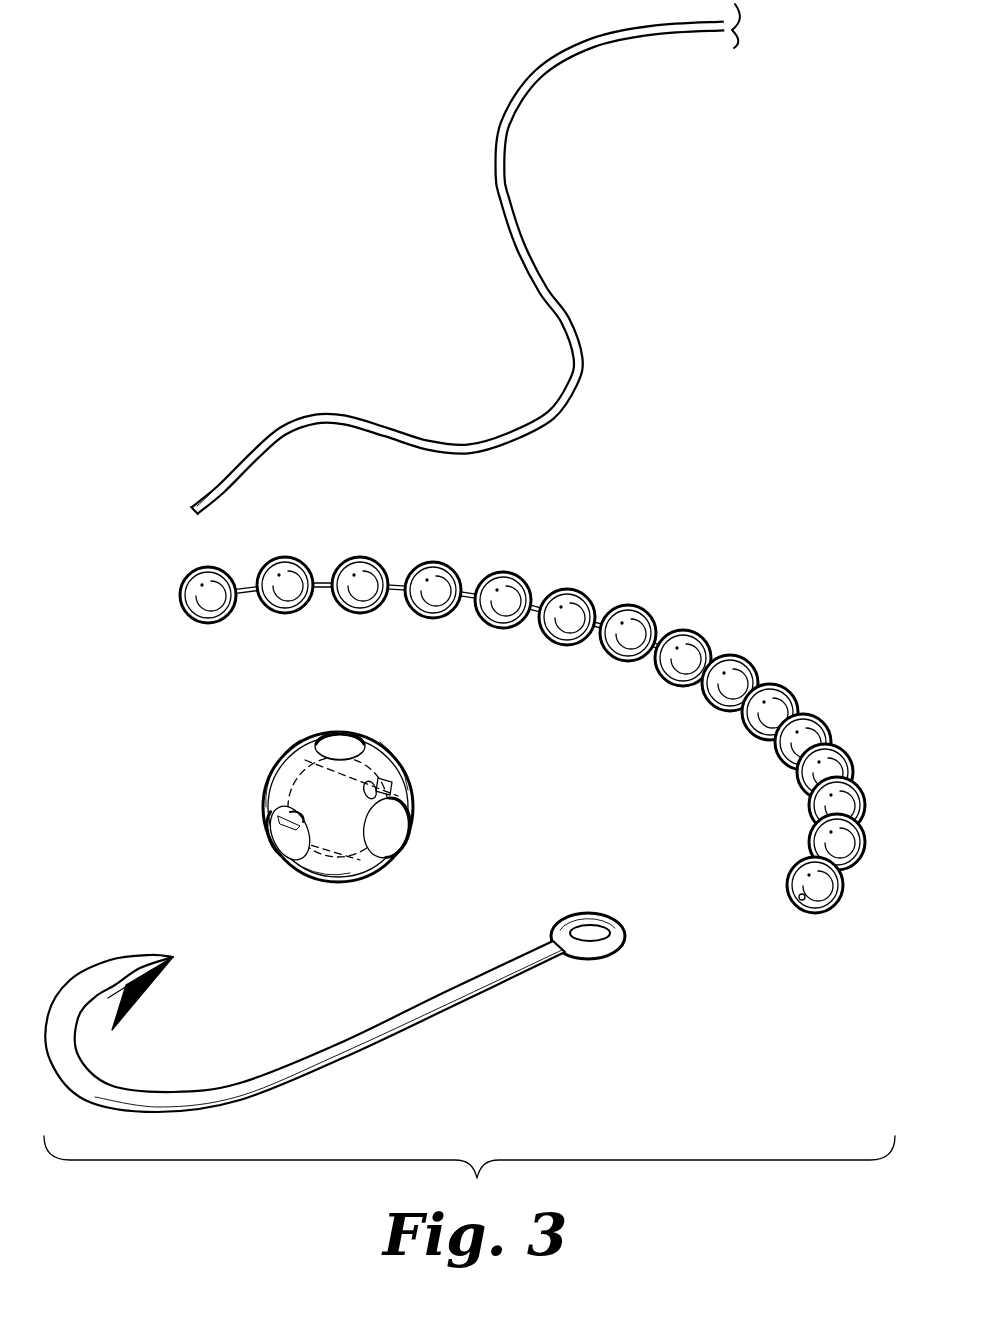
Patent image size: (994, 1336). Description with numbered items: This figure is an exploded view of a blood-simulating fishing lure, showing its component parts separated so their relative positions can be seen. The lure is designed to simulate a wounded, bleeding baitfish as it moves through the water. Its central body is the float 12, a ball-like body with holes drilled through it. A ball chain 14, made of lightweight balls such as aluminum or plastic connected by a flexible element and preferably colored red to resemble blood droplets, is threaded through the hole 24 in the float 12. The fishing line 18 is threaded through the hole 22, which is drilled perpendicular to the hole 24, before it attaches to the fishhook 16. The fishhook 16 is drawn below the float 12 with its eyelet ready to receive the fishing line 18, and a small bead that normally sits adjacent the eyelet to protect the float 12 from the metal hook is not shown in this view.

The float 12 is at (348, 796).
The ball chain 14 is at (693, 632).
The fishhook 16 is at (352, 1035).
The fishing line 18 is at (494, 142).
The hole 22 is at (280, 840).
The hole 24 is at (282, 772).